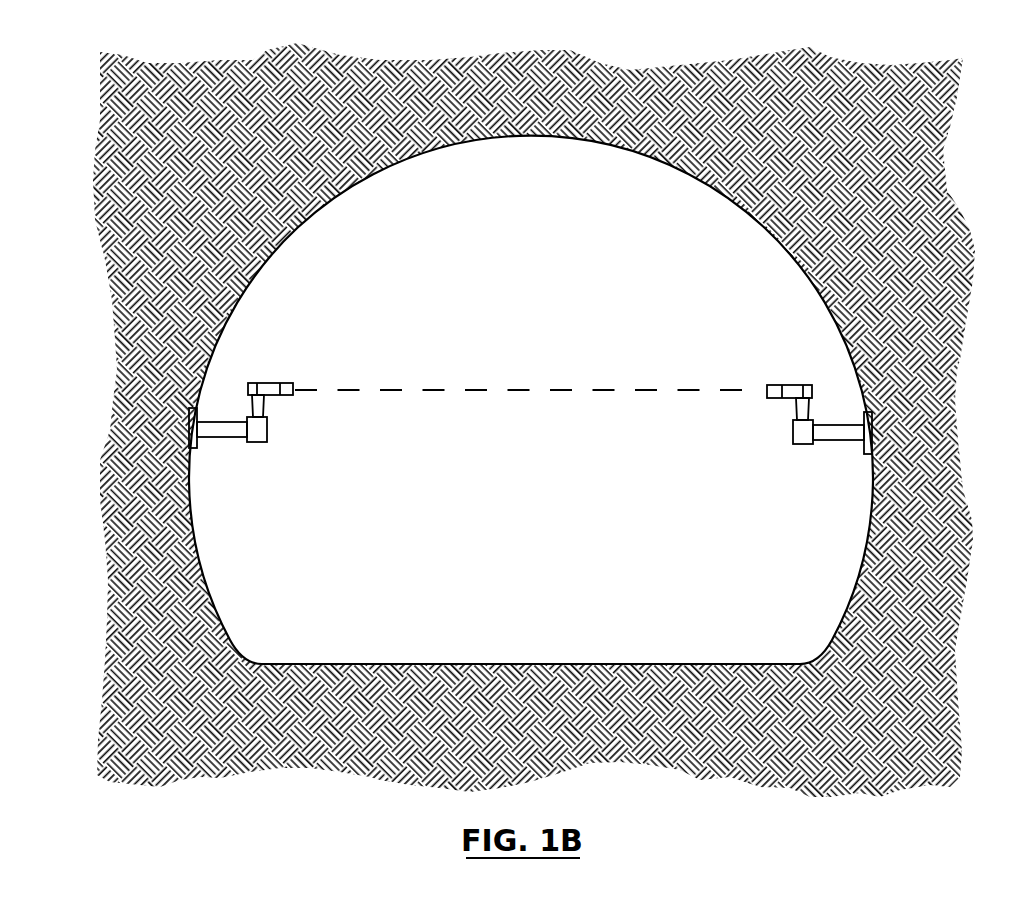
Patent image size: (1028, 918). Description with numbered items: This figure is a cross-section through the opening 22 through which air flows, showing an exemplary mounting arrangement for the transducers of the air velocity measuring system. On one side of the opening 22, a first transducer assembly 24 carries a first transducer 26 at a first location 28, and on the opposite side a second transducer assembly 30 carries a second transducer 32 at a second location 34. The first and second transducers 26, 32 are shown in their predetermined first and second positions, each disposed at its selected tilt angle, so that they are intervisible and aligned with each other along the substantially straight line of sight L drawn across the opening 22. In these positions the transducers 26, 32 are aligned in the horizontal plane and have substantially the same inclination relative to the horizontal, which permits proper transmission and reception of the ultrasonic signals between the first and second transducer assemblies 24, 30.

The opening 22 is at (555, 601).
The first transducer assembly 24 is at (826, 457).
The first transducer 26 is at (826, 387).
The first location 28 is at (874, 431).
The second transducer assembly 30 is at (228, 455).
The second transducer 32 is at (234, 393).
The second location 34 is at (181, 427).
The line of sight L is at (590, 382).